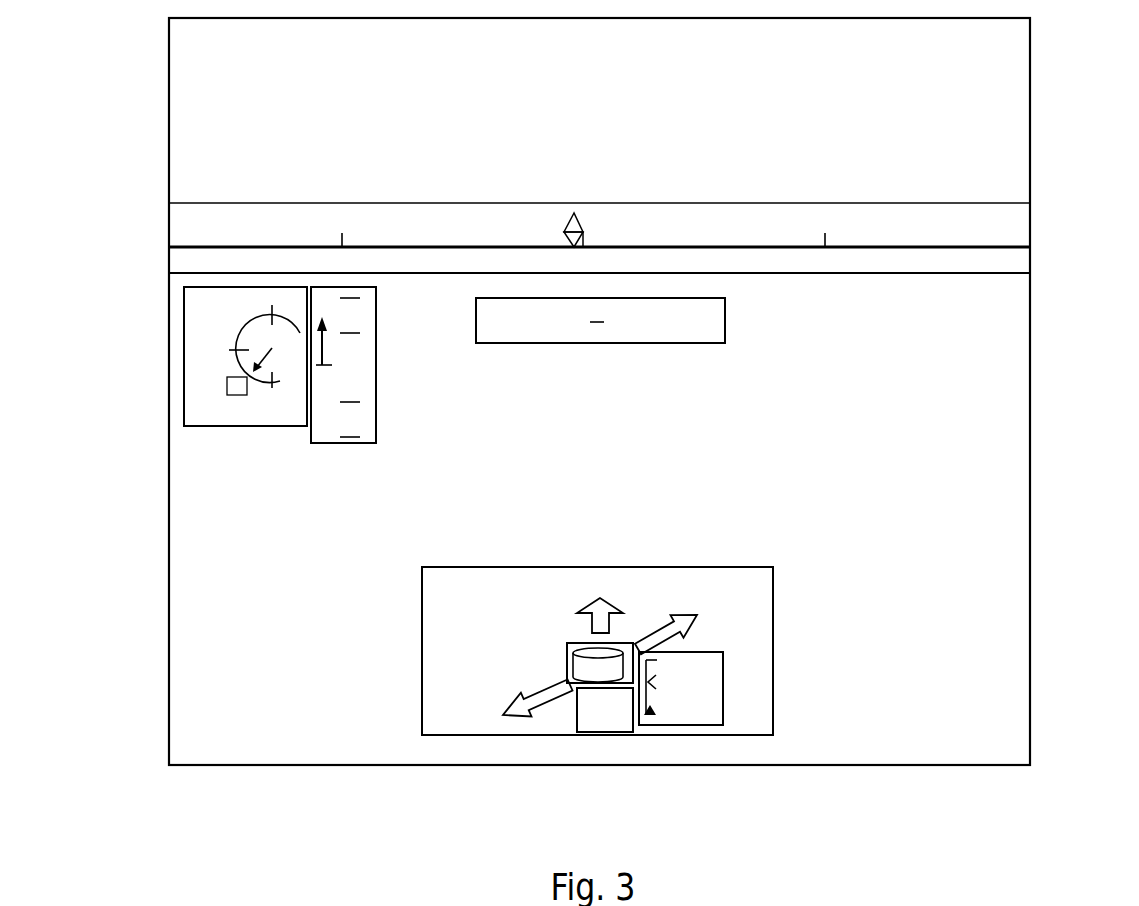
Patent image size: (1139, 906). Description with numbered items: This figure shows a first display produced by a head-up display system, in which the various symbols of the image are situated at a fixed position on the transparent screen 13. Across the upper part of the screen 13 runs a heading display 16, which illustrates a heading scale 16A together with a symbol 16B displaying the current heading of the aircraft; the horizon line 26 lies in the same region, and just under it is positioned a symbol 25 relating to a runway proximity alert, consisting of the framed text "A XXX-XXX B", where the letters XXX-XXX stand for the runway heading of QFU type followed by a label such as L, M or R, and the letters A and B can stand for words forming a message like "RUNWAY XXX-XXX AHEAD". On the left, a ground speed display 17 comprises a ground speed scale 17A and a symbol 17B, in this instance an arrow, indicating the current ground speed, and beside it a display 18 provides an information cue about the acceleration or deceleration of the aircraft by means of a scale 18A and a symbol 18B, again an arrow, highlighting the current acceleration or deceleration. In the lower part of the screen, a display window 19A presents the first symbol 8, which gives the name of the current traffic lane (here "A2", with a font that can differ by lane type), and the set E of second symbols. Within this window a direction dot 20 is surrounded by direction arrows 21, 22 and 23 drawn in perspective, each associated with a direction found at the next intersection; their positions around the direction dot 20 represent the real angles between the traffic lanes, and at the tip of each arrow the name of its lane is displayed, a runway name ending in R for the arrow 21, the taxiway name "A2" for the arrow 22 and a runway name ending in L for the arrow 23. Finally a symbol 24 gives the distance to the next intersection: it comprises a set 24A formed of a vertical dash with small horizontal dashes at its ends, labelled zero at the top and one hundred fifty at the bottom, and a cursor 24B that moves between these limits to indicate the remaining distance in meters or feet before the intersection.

The transparent screen 13 is at (923, 765).
The heading display 16 is at (896, 273).
The heading scale 16A is at (712, 228).
The current heading symbol 16B is at (565, 212).
The ground speed display 17 is at (196, 394).
The ground speed scale 17A is at (199, 330).
The ground speed symbol 17B is at (258, 351).
The acceleration display 18 is at (392, 404).
The acceleration scale 18A is at (365, 406).
The acceleration symbol 18B is at (323, 347).
The display window 19A is at (774, 704).
The direction dot 20 is at (567, 655).
The direction arrow 21 is at (532, 712).
The direction arrow 22 is at (611, 601).
The direction arrow 23 is at (700, 622).
The distance symbol 24 is at (750, 735).
The dash set 24A is at (652, 718).
The cursor 24B is at (669, 681).
The runway proximity alert symbol 25 is at (602, 343).
The horizon line 26 is at (1001, 242).
The first symbol 8 is at (605, 732).
The set of second symbols E is at (543, 590).